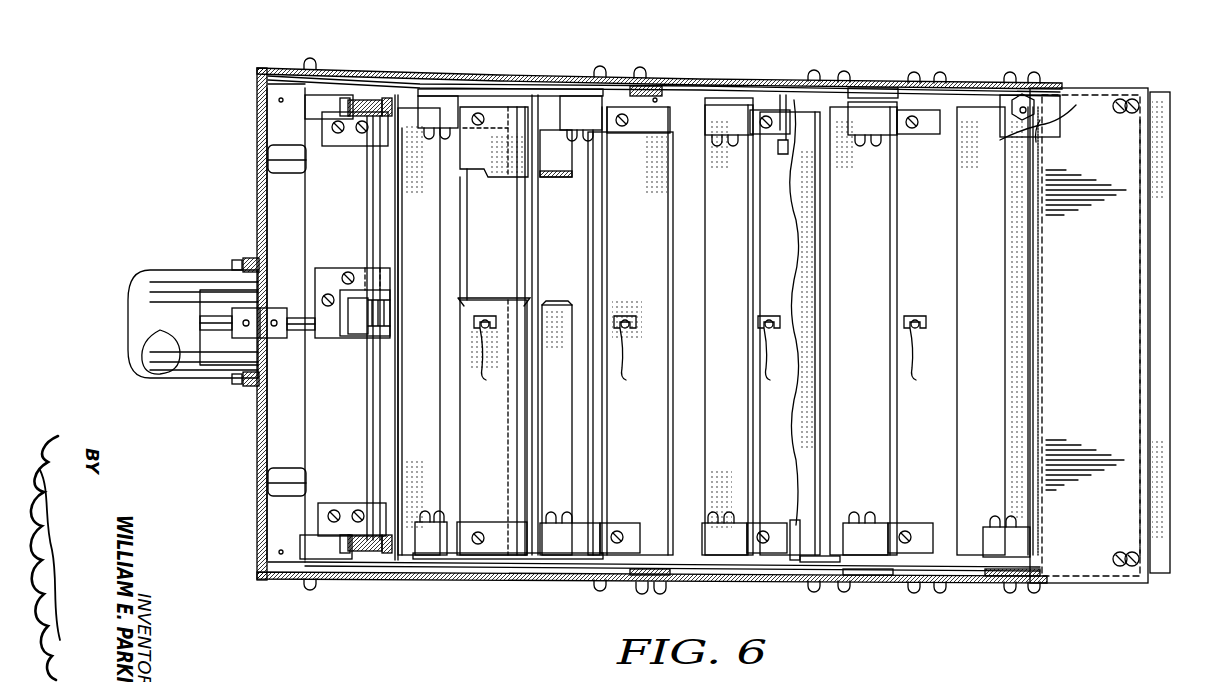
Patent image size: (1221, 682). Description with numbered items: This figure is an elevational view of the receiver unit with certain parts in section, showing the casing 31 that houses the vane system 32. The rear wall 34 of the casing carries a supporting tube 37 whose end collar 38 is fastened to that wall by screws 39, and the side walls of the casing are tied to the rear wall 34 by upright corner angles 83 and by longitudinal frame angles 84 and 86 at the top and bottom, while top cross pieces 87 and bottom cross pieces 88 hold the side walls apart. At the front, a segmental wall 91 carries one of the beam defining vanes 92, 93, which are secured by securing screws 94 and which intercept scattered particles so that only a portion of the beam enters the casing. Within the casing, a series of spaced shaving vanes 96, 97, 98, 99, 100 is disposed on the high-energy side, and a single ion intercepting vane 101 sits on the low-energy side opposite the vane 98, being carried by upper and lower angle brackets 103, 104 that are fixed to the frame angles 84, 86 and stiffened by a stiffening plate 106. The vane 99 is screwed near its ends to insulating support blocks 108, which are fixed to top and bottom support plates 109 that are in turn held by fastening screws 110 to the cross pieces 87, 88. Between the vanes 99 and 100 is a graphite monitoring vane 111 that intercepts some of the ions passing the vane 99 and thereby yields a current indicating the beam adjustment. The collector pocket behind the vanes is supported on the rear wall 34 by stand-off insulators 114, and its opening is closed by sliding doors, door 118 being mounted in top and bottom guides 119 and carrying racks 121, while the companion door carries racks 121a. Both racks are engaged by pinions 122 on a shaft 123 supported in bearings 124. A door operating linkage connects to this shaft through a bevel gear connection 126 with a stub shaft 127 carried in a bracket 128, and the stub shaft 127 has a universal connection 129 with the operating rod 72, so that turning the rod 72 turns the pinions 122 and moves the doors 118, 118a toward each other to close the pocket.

The casing 31 is at (922, 575).
The vane system 32 is at (794, 560).
The rear wall 34 is at (262, 418).
The supporting tube 37 is at (132, 311).
The end collar 38 is at (248, 392).
The screws 39 is at (232, 385).
The operating rod 72 is at (226, 315).
The upright corner angles 83 is at (266, 516).
The longitudinal frame angle 84 is at (900, 88).
The longitudinal frame angle 86 is at (684, 568).
The top cross pieces 87 is at (633, 99).
The bottom cross pieces 88 is at (647, 588).
The segmental wall 91 is at (1156, 290).
The beam defining vane 92 is at (1063, 94).
The beam defining vane 93 is at (1166, 189).
The securing screws 94 is at (1124, 97).
The shaving vane 96 is at (1032, 138).
The shaving vane 97 is at (956, 249).
The shaving vane 98 is at (816, 306).
The shaving vane 99 is at (666, 194).
The shaving vane 100 is at (500, 108).
The ion intercepting vane 101 is at (826, 197).
The upper angle bracket 103 is at (860, 89).
The lower angle bracket 104 is at (806, 560).
The stiffening plate 106 is at (794, 120).
The support blocks 108 is at (749, 105).
The support plates 109 is at (527, 90).
The fastening screws 110 is at (662, 93).
The monitoring vane 111 is at (562, 130).
The stand-off insulators 114 is at (279, 148).
The sliding door 118 is at (442, 199).
The door 118a is at (534, 254).
The top and bottom guides 119 is at (336, 96).
The racks 121 is at (378, 552).
The racks 121a is at (356, 98).
The pinions 122 is at (376, 100).
The shaft 123 is at (370, 178).
The bearings 124 is at (326, 118).
The bevel gear connection 126 is at (376, 336).
The stub shaft 127 is at (311, 332).
The bracket 128 is at (324, 270).
The universal connection 129 is at (246, 307).